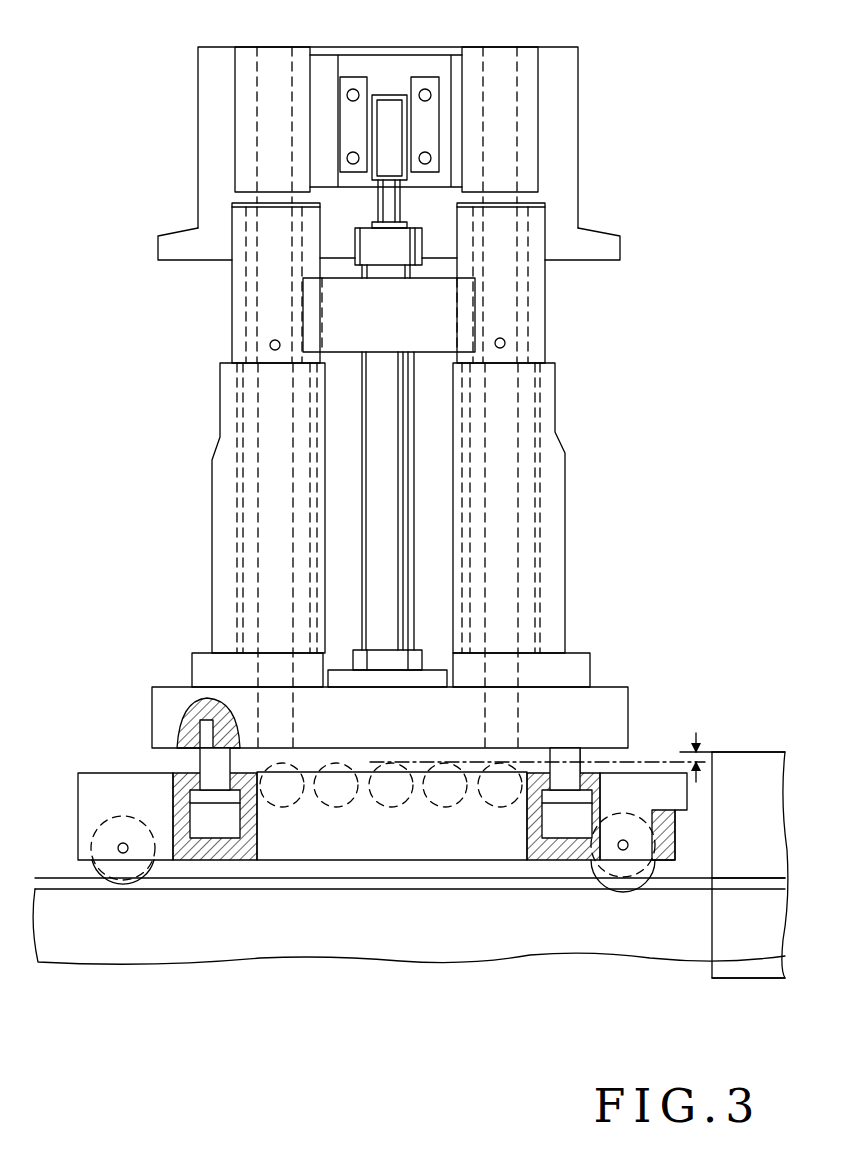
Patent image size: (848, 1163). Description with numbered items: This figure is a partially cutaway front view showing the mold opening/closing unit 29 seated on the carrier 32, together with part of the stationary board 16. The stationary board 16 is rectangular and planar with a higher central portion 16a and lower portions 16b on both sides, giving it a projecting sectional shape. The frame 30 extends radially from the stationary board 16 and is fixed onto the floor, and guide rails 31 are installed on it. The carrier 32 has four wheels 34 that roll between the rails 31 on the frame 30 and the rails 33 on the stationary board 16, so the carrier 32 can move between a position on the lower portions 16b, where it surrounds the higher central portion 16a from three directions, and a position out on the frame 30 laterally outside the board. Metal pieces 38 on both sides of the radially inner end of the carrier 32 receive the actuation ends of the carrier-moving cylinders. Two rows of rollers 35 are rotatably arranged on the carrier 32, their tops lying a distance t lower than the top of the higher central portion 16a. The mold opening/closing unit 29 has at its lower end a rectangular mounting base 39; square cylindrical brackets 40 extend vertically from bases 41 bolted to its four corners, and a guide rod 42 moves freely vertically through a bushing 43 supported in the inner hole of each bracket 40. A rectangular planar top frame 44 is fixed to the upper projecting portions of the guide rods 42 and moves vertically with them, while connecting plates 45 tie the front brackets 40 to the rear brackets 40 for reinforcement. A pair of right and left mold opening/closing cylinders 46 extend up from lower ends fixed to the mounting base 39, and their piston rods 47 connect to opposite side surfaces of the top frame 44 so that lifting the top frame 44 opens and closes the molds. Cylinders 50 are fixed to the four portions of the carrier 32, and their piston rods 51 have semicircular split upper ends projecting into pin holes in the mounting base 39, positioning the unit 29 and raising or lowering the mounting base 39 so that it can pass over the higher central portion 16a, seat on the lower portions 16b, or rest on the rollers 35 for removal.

The stationary board 16 is at (742, 748).
The higher central portion 16a is at (757, 710).
The lower portions 16b is at (747, 888).
The mold opening/closing unit 29 is at (622, 210).
The frame 30 is at (200, 940).
The guide rails 31 is at (57, 878).
The carrier 32 is at (92, 768).
The rails 33 is at (757, 875).
The wheels 34 is at (100, 870).
The rollers 35 is at (340, 760).
The metal pieces 38 is at (665, 862).
The mounting base 39 is at (167, 687).
The brackets 40 is at (212, 496).
The bases 41 is at (200, 652).
The guide rods 42 is at (257, 118).
The bushing 43 is at (247, 303).
The top frame 44 is at (578, 52).
The connecting plates 45 is at (345, 354).
The mold opening/closing cylinders 46 is at (415, 402).
The piston rods 47 is at (400, 198).
The cylinders 50 is at (230, 828).
The piston rods 51 is at (190, 768).